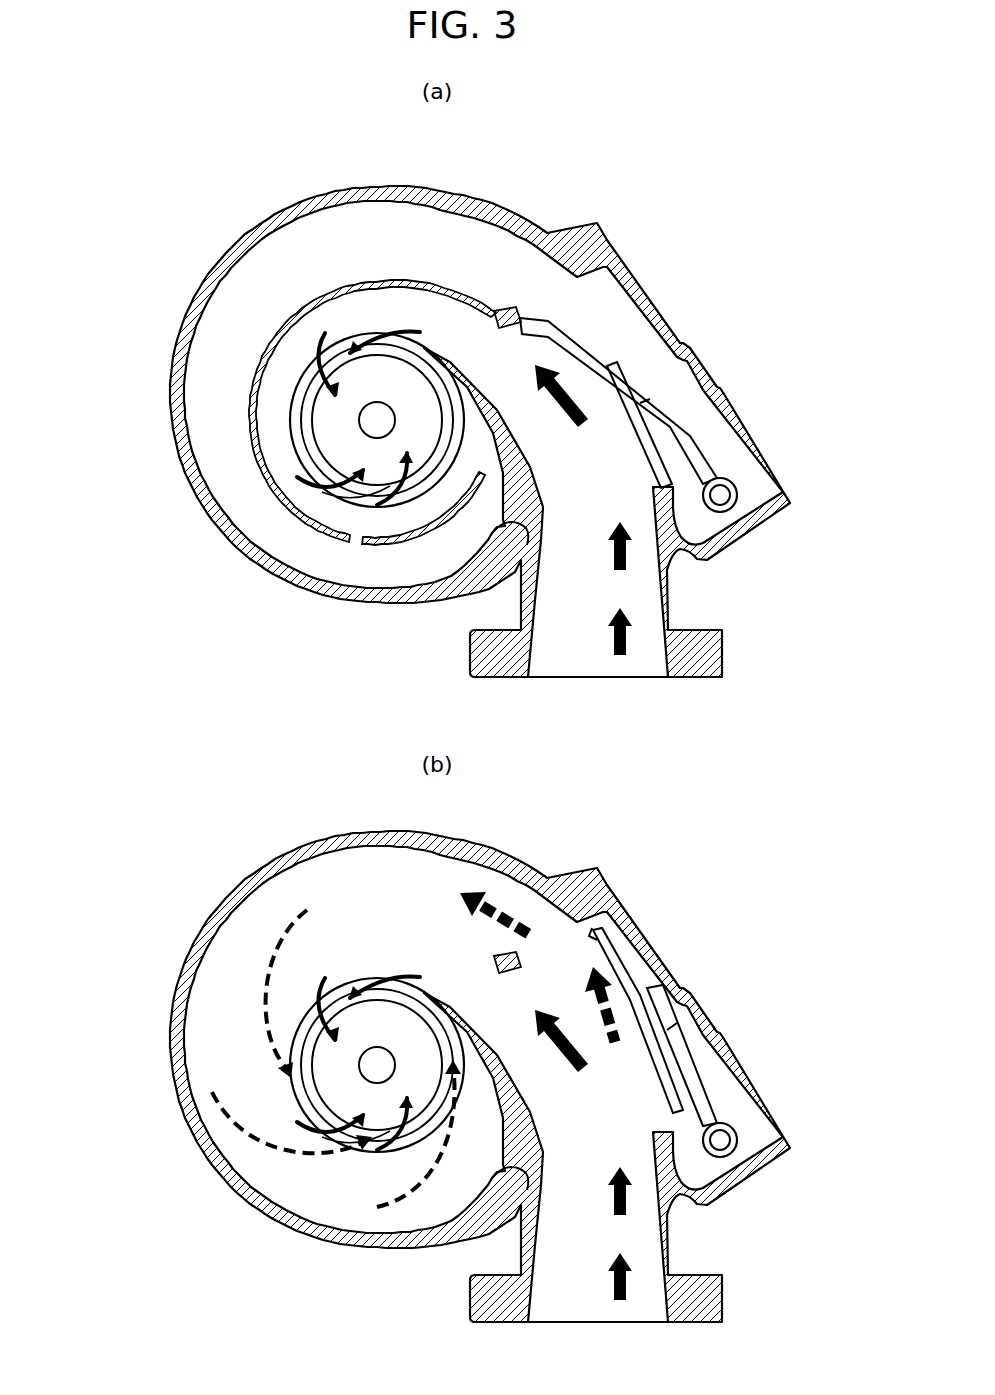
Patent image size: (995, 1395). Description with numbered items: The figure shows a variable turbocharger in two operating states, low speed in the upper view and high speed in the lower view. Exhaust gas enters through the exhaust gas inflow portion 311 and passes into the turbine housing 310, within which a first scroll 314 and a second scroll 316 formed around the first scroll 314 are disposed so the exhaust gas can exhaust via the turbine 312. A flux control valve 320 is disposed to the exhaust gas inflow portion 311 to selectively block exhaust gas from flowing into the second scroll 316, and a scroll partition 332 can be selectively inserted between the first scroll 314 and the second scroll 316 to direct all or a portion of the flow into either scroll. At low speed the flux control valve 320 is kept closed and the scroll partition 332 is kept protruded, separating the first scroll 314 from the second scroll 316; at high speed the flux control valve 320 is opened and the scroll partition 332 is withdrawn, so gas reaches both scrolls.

The turbine housing 310 is at (517, 222).
The exhaust gas inflow portion 311 is at (630, 595).
The turbine 312 is at (327, 437).
The first scroll 314 is at (365, 313).
The second scroll 316 is at (320, 238).
The flux control valve 320 is at (698, 448).
The scroll partition 332 is at (252, 394).